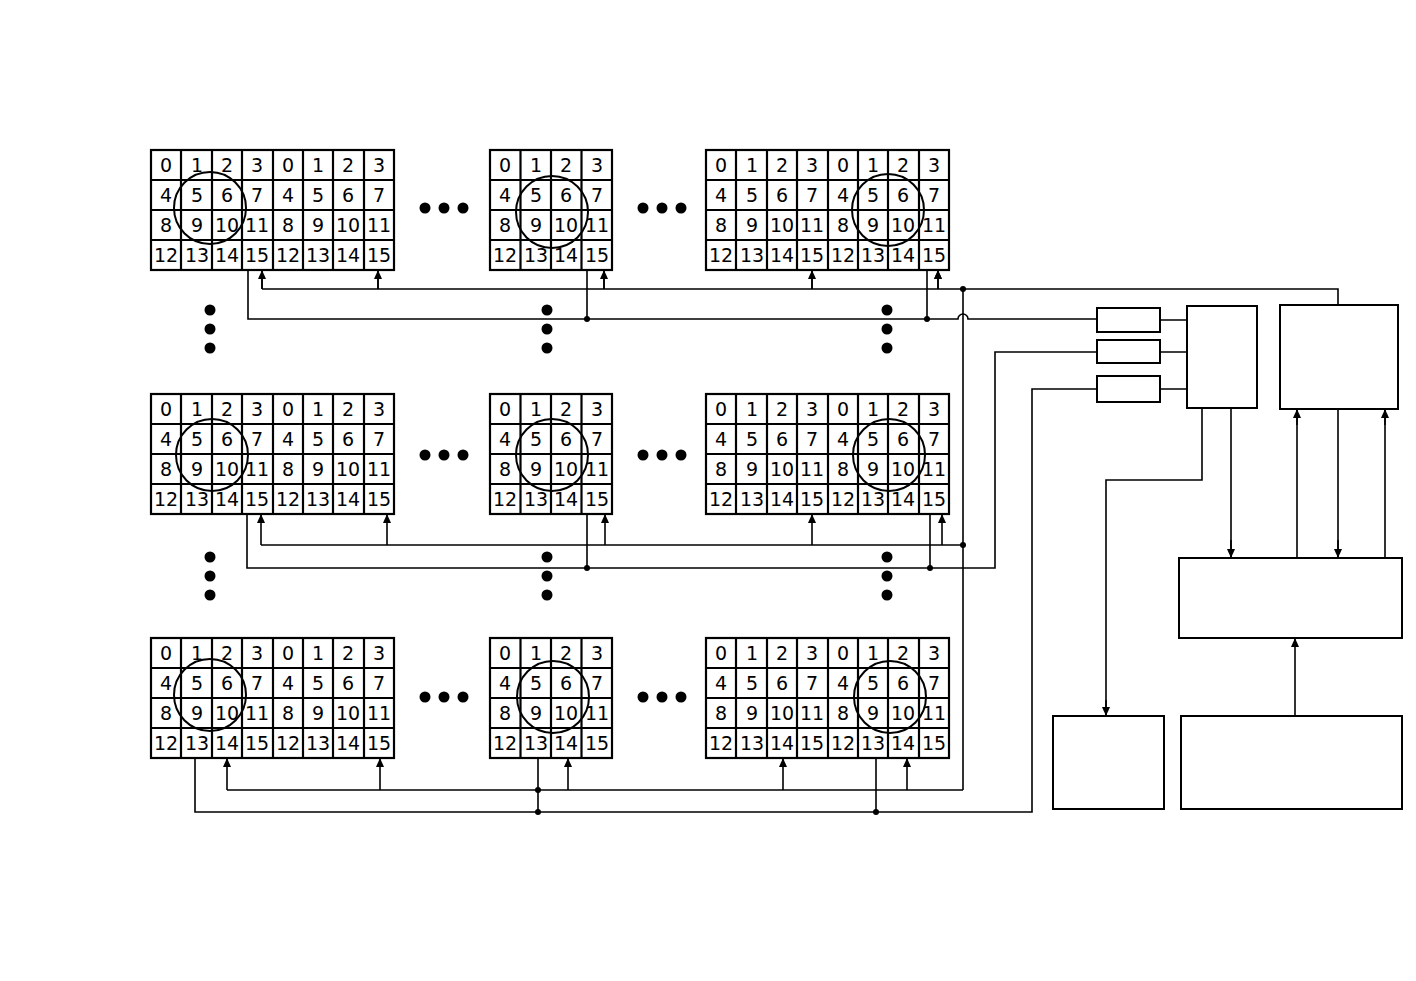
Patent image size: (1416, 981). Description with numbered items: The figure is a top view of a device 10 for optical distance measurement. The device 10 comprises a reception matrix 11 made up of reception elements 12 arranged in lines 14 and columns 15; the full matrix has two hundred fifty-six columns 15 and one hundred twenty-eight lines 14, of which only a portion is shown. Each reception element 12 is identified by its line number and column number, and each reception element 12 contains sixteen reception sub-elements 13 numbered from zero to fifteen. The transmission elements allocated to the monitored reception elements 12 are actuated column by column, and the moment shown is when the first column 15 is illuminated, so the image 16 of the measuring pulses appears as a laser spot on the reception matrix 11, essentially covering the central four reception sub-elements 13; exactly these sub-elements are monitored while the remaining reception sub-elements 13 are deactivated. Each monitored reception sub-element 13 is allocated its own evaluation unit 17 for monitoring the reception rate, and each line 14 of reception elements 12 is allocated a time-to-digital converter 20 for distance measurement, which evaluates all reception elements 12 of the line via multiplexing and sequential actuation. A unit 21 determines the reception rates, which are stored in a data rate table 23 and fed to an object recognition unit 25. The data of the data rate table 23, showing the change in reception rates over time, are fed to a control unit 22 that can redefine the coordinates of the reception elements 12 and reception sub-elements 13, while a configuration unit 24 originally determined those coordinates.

The device 10 is at (980, 133).
The reception matrix 11 is at (212, 93).
The reception element 12 is at (160, 138).
The reception sub-element 13 is at (385, 637).
The line 14 is at (127, 218).
The column 15 is at (243, 118).
The image 16 is at (183, 512).
The evaluation unit 17 is at (1142, 355).
The time-to-digital converter 20 is at (1138, 290).
The unit for determining the reception rates 21 is at (1208, 368).
The control unit 22 is at (1325, 368).
The data rate table 23 is at (1276, 614).
The configuration unit 24 is at (1276, 776).
The object recognition unit 25 is at (1094, 776).